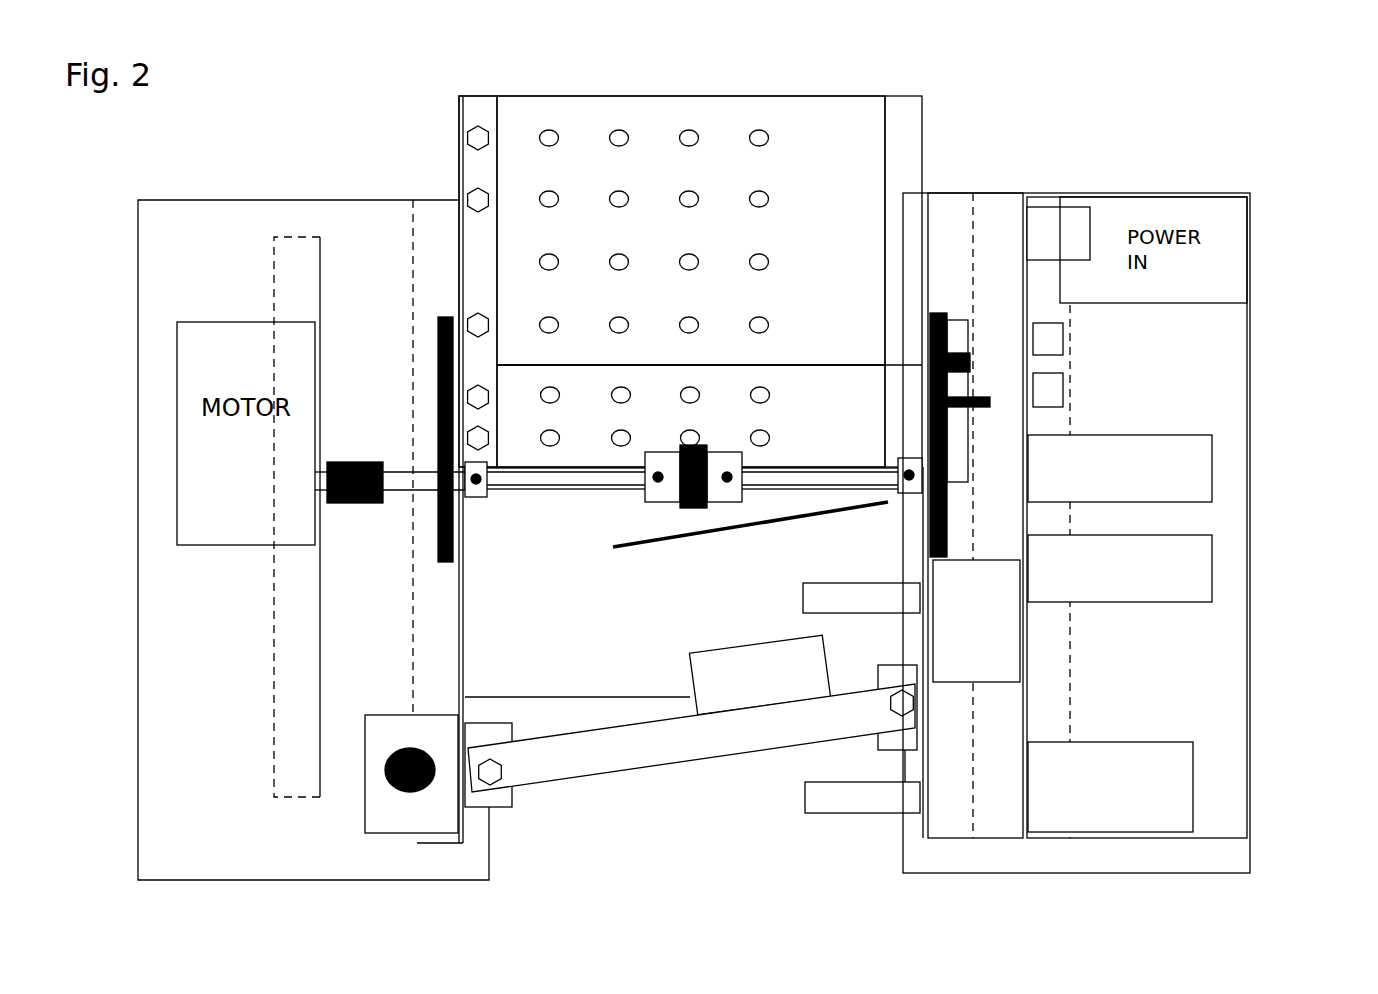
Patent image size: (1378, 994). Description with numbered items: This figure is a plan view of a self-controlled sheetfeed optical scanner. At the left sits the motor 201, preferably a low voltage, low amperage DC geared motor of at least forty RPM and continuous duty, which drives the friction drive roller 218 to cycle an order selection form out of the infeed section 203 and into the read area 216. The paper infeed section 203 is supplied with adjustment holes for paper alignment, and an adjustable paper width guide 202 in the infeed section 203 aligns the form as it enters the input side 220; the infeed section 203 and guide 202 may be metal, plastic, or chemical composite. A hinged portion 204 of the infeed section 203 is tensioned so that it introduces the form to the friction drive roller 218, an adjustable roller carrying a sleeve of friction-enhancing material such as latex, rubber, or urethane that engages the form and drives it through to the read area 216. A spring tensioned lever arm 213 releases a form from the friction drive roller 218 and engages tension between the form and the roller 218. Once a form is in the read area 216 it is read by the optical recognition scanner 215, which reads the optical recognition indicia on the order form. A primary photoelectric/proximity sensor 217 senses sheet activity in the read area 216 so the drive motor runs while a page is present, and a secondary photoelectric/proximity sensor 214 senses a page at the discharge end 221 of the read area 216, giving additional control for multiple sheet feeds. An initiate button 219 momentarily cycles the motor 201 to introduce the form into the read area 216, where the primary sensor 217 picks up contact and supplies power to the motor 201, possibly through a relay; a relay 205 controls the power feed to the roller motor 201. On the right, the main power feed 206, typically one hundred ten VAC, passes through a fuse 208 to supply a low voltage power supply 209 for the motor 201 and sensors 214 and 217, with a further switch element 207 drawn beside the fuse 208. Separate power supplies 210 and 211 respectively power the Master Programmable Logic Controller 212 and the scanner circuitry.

The motor 201 is at (190, 302).
The adjustable paper width guide 202 is at (454, 97).
The infeed section 203 is at (869, 83).
The hinged portion 204 is at (742, 365).
The relay 205 is at (1047, 193).
The main power feed 206 is at (1265, 214).
The switch 207 is at (1066, 352).
The fuse 208 is at (1067, 407).
The power supply 209 is at (1227, 457).
The power supply 210 is at (1229, 562).
The power supply 211 is at (1011, 646).
The Master Programmable Logic Controller 212 is at (1219, 780).
The spring tensioned lever arm 213 is at (985, 338).
The secondary photoelectric/proximity sensor 214 is at (846, 837).
The optical recognition scanner 215 is at (690, 673).
The read area 216 is at (637, 567).
The primary photoelectric/proximity sensor 217 is at (800, 594).
The friction drive roller 218 is at (643, 517).
The initiate button 219 is at (375, 813).
The input side 220 is at (842, 187).
The discharge end 221 is at (615, 818).